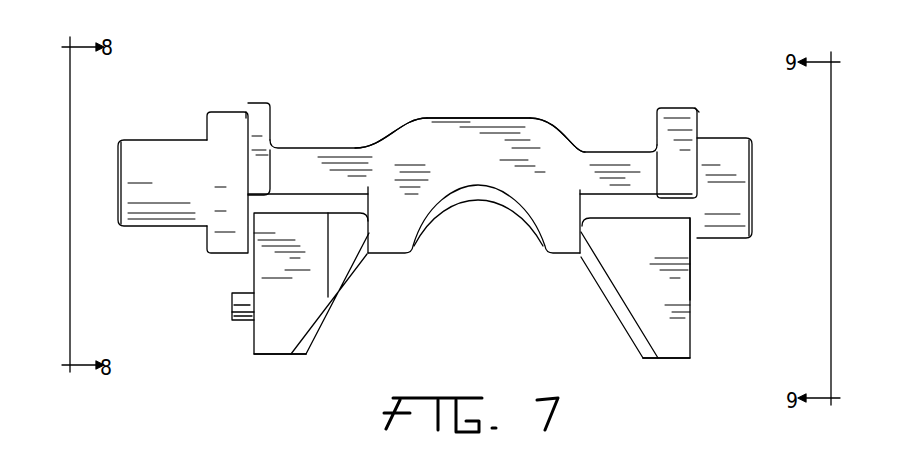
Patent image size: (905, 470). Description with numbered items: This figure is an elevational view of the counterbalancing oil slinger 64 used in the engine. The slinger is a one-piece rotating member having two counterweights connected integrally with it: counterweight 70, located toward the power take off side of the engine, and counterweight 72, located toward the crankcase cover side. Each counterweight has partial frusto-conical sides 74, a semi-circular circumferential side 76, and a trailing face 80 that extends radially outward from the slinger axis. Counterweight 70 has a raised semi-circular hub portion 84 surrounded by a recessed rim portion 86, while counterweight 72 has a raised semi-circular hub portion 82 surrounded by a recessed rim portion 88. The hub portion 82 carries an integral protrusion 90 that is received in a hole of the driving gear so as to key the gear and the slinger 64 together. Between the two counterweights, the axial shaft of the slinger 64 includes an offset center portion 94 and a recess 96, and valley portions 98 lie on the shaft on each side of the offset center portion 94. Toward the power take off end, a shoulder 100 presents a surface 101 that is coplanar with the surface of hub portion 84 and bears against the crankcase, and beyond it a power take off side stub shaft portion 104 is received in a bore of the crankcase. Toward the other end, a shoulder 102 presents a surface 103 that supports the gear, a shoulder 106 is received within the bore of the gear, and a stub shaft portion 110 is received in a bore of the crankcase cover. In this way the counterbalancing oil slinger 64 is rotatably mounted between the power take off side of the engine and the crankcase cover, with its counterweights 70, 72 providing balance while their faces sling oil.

The counterbalancing oil slinger 64 is at (520, 98).
The counterweight 70 is at (643, 365).
The counterweight 72 is at (258, 363).
The partial frusto-conical sides 74 is at (337, 298).
The semi-circular circumferential sides 76 is at (288, 318).
The trailing faces 80 is at (308, 203).
The raised semi-circular hub portion 82 is at (245, 328).
The raised semi-circular hub portion 84 is at (697, 262).
The recessed rim portion 86 is at (695, 330).
The recessed rim portion 88 is at (250, 347).
The protrusion 90 is at (233, 298).
The offset center portion 94 is at (470, 117).
The recess 96 is at (487, 195).
The valley portions 98 is at (340, 148).
The shoulder 100 is at (673, 120).
The surface 101 is at (708, 110).
The shoulder 102 is at (260, 115).
The surface 103 is at (242, 125).
The power take off side stub shaft portion 104 is at (727, 152).
The shoulder 106 is at (230, 128).
The stub shaft portion 110 is at (167, 160).